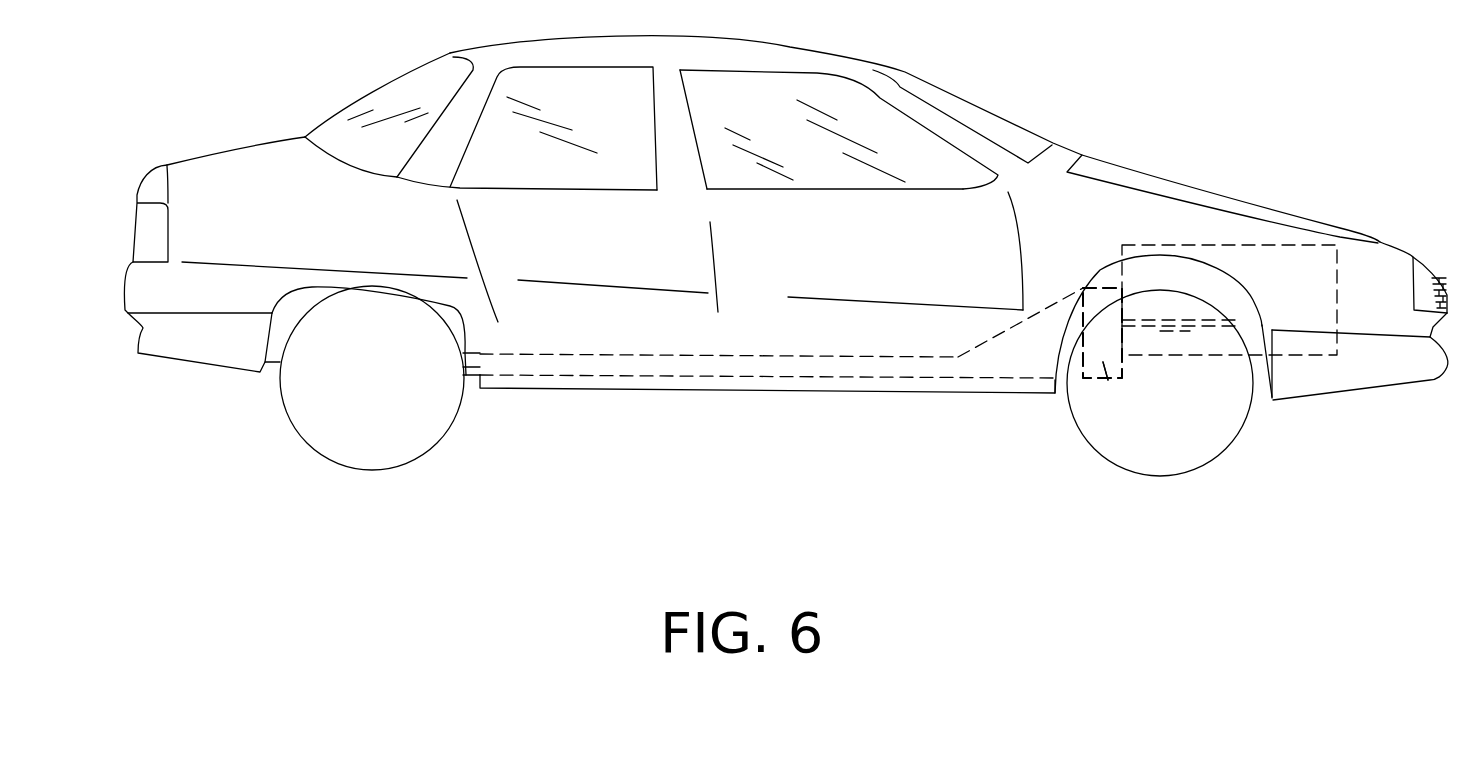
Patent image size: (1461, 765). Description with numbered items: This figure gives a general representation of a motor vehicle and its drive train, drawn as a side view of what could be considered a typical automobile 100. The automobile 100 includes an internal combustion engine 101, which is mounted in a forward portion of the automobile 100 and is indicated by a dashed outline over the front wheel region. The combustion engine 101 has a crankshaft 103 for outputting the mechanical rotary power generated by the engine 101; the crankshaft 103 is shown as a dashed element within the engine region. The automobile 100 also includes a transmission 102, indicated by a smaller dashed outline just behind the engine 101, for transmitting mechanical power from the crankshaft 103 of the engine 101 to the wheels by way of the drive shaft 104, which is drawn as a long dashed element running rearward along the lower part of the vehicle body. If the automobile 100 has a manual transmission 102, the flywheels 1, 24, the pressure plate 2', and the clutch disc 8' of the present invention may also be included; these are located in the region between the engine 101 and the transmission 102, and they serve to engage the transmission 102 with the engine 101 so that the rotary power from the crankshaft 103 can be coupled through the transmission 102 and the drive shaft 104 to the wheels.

The automobile 100 is at (228, 515).
The internal combustion engine 101 is at (1260, 303).
The transmission 102 is at (1012, 363).
The crankshaft 103 is at (1187, 332).
The drive shaft 104 is at (720, 378).
The flywheel 1 is at (1107, 410).
The flywheel 24 is at (1060, 490).
The pressure plate 2' is at (1091, 389).
The clutch disc 8' is at (1091, 389).